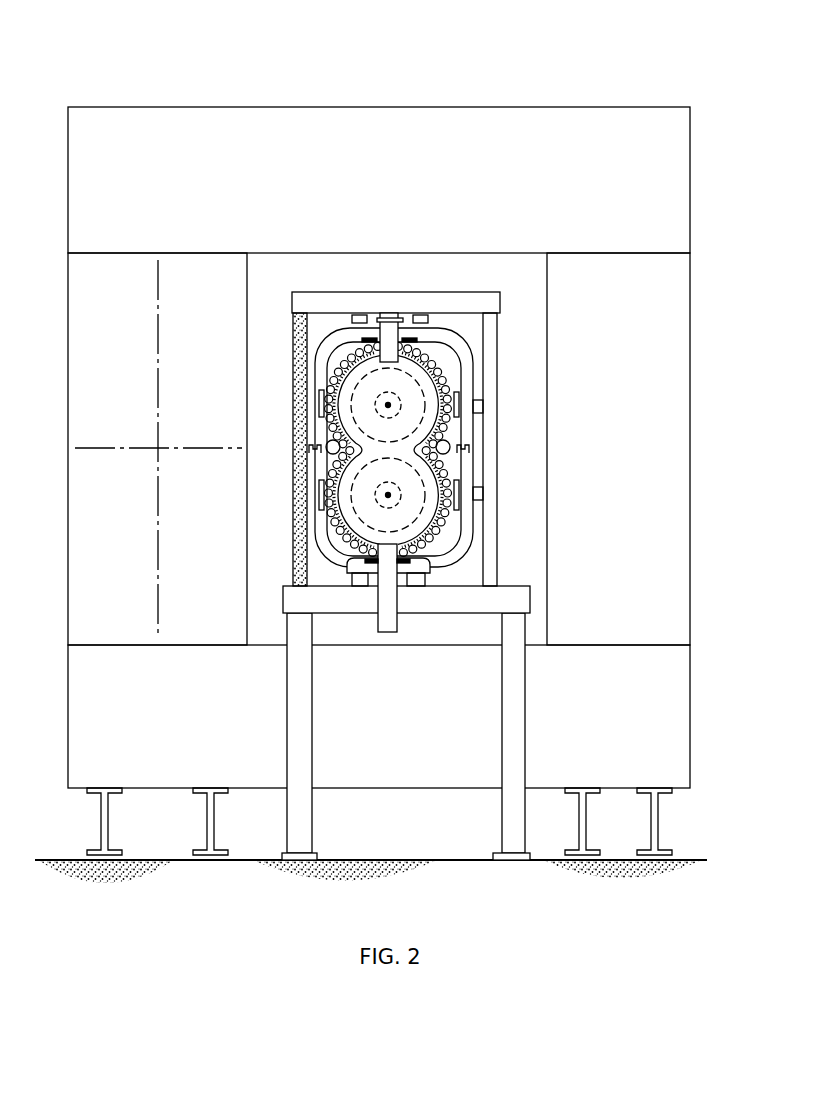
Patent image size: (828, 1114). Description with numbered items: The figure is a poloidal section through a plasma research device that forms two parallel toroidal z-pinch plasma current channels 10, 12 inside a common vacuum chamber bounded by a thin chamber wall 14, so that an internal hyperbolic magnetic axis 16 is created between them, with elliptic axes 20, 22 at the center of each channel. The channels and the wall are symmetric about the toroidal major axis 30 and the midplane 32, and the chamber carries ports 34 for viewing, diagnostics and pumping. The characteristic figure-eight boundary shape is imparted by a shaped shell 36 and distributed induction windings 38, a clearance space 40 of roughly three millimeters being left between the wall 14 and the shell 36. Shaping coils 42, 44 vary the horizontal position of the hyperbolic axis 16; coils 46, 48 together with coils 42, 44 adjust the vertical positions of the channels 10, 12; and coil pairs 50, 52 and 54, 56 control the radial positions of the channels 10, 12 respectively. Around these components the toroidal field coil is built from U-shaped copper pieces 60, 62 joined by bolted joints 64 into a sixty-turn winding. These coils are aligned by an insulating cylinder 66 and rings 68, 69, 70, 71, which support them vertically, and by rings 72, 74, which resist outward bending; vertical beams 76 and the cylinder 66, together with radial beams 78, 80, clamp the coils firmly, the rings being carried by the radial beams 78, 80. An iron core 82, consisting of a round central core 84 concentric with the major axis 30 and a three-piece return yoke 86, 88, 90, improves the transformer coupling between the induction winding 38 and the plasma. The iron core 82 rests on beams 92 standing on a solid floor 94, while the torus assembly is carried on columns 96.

The z-pinch discharge channel 10 is at (399, 413).
The z-pinch discharge channel 12 is at (399, 509).
The chamber wall 14 is at (426, 381).
The internal hyperbolic magnetic axis 16 is at (406, 440).
The elliptic axis 20 is at (388, 404).
The elliptic axis 22 is at (388, 497).
The toroidal major axis 30 is at (157, 330).
The midplane 32 is at (197, 448).
The port 34 is at (391, 316).
The shaped shell 36 is at (484, 311).
The induction winding 38 is at (350, 367).
The clearance space 40 is at (448, 350).
The shaping coil 42 is at (327, 443).
The shaping coil 44 is at (450, 446).
The shaping coil 46 is at (364, 338).
The shaping coil 48 is at (350, 562).
The shaping coil 50 is at (320, 397).
The shaping coil 52 is at (459, 397).
The shaping coil 54 is at (320, 492).
The shaping coil 56 is at (459, 486).
The U-shaped piece 60 is at (466, 378).
The U-shaped piece 62 is at (460, 546).
The bolted joint 64 is at (313, 450).
The cylinder 66 is at (300, 324).
The ring 68 is at (365, 315).
The ring 69 is at (419, 315).
The ring 70 is at (360, 586).
The ring 71 is at (416, 586).
The ring 72 is at (477, 407).
The ring 74 is at (477, 494).
The vertical beam 76 is at (490, 573).
The radial beam 78 is at (486, 306).
The radial beam 80 is at (478, 600).
The iron core 82 is at (391, 107).
The central core 84 is at (99, 535).
The return yoke piece 86 is at (378, 202).
The return yoke piece 88 is at (604, 465).
The return yoke piece 90 is at (386, 756).
The beam 92 is at (104, 827).
The floor 94 is at (371, 876).
The column 96 is at (302, 737).